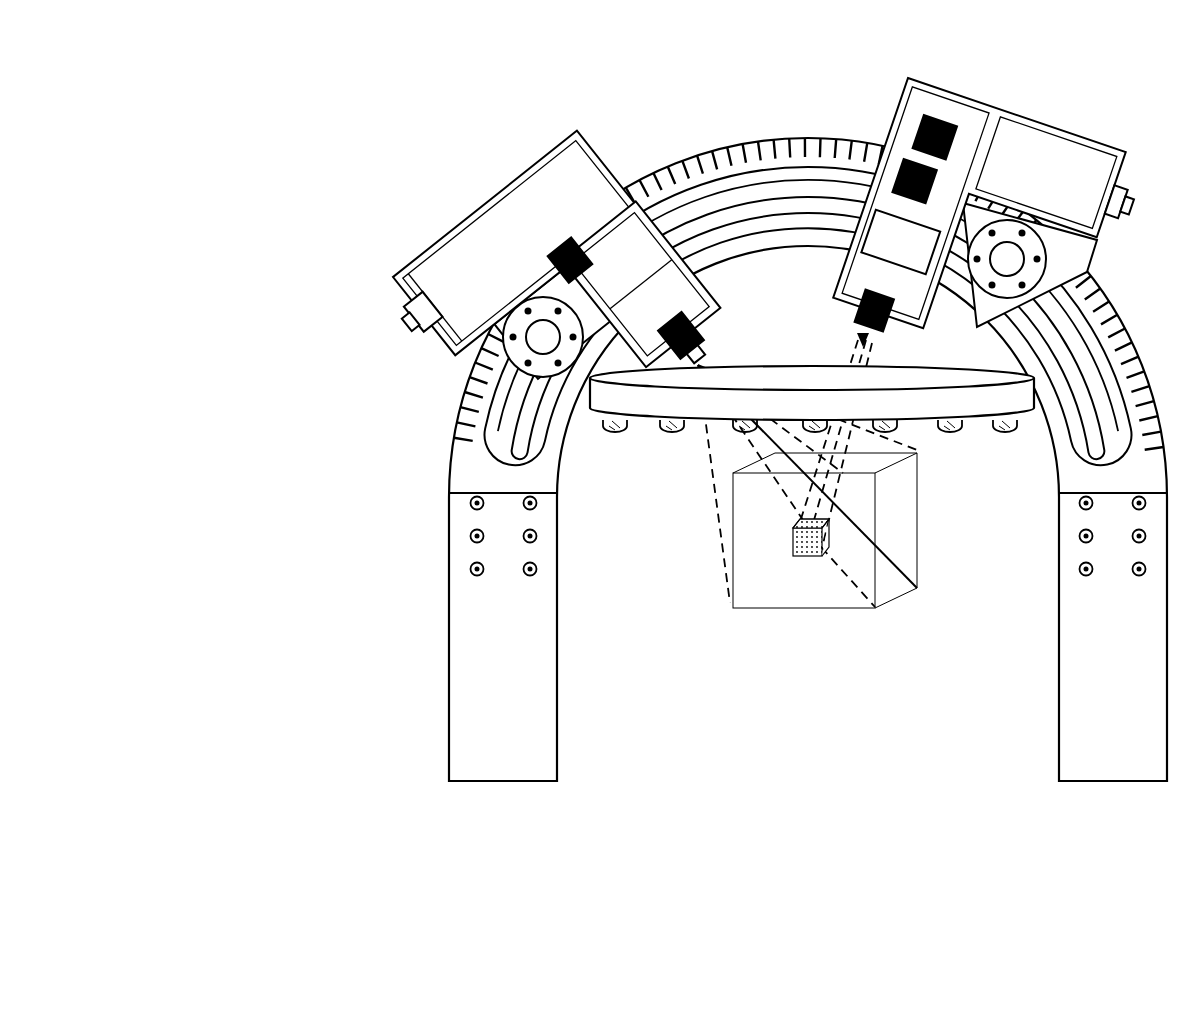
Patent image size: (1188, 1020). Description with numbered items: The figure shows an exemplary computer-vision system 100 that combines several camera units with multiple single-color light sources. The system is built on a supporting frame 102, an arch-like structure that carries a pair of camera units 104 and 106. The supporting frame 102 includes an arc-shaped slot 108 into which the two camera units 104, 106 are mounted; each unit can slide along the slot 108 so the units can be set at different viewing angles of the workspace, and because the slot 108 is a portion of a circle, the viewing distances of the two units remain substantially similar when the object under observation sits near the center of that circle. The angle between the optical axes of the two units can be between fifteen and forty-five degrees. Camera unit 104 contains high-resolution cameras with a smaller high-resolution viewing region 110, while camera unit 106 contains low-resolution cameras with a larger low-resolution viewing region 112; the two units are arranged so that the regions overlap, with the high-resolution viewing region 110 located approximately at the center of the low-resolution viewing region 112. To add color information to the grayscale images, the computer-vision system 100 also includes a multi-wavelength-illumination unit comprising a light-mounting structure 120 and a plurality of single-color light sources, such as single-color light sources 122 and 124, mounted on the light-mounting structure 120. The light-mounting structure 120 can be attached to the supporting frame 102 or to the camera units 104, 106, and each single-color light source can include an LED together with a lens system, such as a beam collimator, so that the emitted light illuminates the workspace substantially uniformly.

The computer-vision system 100 is at (296, 91).
The supporting frame 102 is at (485, 636).
The camera unit 104 is at (1035, 150).
The camera unit 106 is at (553, 195).
The arc-shaped slot 108 is at (510, 423).
The high-resolution viewing region 110 is at (798, 557).
The low-resolution viewing region 112 is at (765, 600).
The light-mounting structure 120 is at (808, 378).
The single-color light source 122 is at (950, 428).
The single-color light source 124 is at (605, 422).